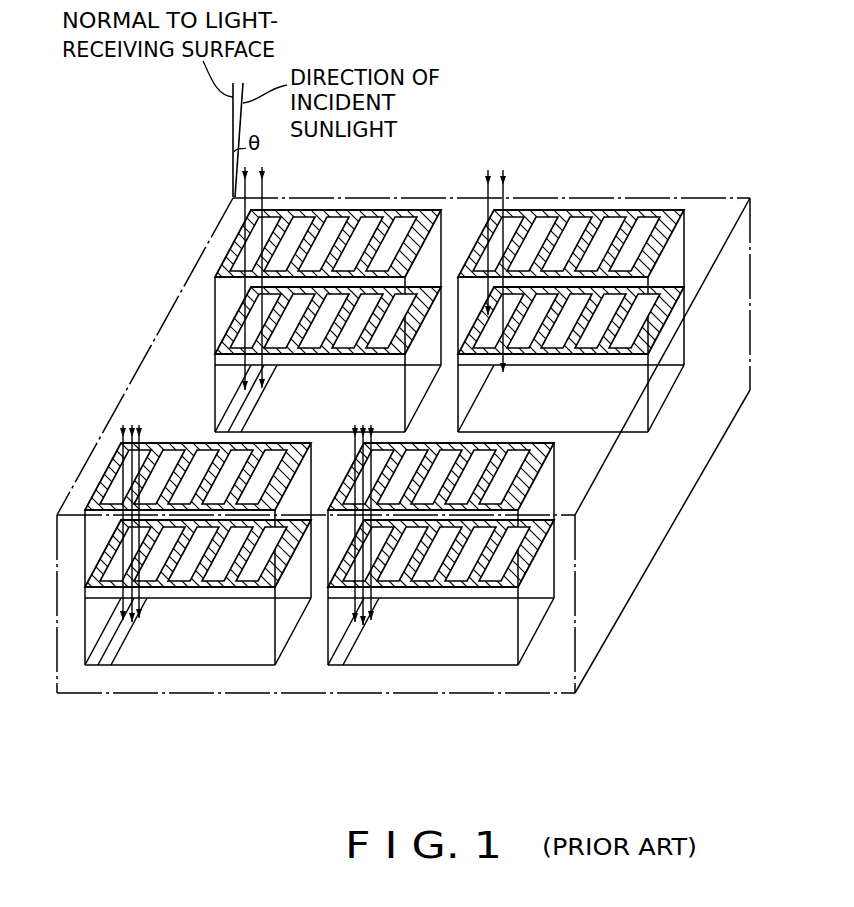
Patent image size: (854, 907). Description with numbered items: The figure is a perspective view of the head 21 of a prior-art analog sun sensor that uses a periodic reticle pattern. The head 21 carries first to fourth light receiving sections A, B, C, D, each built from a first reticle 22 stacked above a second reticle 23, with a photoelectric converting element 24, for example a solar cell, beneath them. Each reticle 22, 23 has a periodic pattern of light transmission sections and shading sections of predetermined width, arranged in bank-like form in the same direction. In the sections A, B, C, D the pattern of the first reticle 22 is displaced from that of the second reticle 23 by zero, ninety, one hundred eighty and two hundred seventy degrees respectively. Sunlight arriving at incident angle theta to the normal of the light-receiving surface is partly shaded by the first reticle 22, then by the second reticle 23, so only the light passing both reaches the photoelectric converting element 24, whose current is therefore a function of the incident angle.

The head 21 is at (146, 381).
The first reticle 22 is at (422, 220).
The second reticle 23 is at (418, 320).
The photoelectric converting element 24 is at (418, 397).
The first light receiving section A is at (321, 300).
The second light receiving section B is at (98, 470).
The third light receiving section C is at (677, 270).
The fourth light receiving section D is at (548, 553).